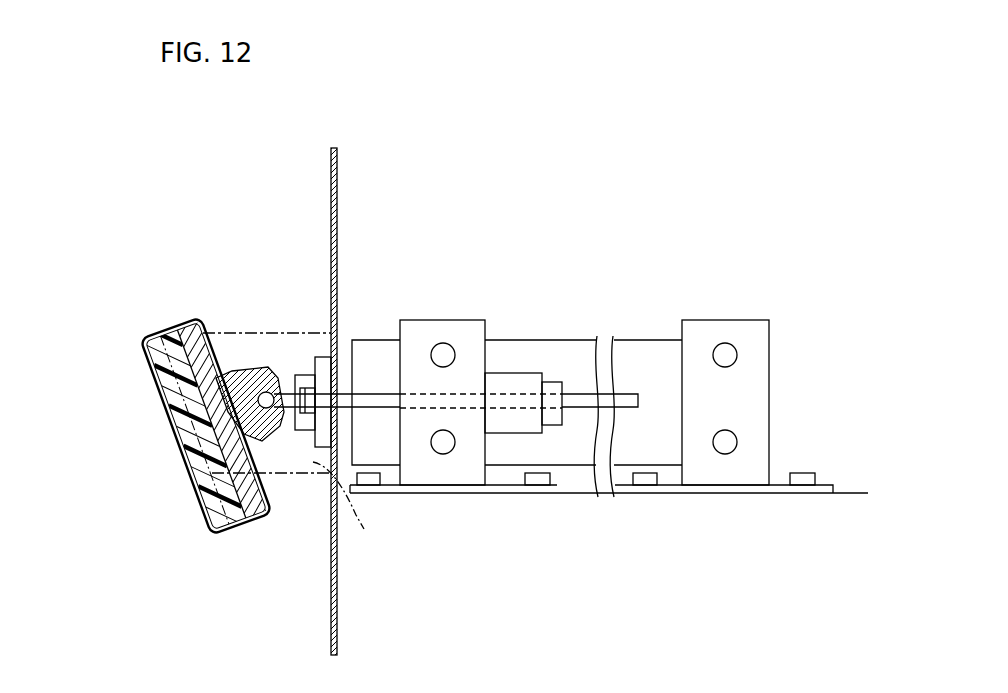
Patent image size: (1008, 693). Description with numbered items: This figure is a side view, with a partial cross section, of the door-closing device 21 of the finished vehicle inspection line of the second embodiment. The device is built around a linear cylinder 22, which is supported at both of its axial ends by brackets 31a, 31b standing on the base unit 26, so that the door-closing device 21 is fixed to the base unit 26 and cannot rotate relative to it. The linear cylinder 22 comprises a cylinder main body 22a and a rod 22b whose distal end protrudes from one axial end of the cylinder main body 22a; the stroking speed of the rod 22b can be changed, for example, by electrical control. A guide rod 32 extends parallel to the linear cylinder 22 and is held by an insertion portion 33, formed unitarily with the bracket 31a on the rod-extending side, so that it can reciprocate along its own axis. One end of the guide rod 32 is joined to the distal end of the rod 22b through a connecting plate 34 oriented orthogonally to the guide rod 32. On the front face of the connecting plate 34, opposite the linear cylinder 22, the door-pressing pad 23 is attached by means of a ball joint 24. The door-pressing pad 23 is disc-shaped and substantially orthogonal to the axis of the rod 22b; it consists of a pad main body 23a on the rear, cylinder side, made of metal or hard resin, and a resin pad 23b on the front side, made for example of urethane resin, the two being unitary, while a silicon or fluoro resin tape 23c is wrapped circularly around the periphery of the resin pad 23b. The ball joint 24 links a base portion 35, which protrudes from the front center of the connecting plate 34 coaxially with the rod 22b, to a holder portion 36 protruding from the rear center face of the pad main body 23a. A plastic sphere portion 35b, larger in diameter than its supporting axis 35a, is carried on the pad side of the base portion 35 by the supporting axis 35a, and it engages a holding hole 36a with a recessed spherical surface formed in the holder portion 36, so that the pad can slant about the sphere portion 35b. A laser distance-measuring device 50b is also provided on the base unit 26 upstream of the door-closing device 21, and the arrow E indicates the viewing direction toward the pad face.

The door-closing device 21 is at (528, 255).
The linear cylinder 22 is at (583, 374).
The cylinder main body 22a is at (549, 344).
The rod 22b is at (343, 392).
The door-pressing pad 23 is at (142, 398).
The pad main body 23a is at (188, 331).
The resin pad 23b is at (166, 336).
The silicon or fluoro resin tape 23c is at (138, 350).
The ball joint 24 is at (330, 256).
The base unit 26 is at (861, 481).
The bracket 31a is at (450, 330).
The bracket 31b is at (738, 328).
The guide rod 32 is at (378, 404).
The insertion portion 33 is at (511, 382).
The connecting plate 34 is at (323, 368).
The base portion 35 is at (288, 381).
The supporting axis 35a is at (291, 408).
The sphere portion 35b is at (263, 416).
The holder portion 36 is at (252, 360).
The holding hole 36a is at (258, 392).
The laser distance-measuring device 50b is at (364, 529).
The arrow E is at (132, 455).